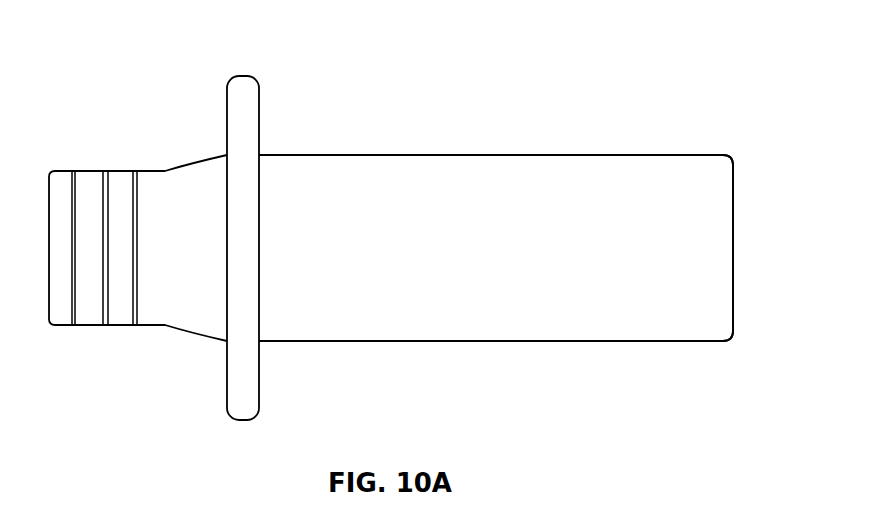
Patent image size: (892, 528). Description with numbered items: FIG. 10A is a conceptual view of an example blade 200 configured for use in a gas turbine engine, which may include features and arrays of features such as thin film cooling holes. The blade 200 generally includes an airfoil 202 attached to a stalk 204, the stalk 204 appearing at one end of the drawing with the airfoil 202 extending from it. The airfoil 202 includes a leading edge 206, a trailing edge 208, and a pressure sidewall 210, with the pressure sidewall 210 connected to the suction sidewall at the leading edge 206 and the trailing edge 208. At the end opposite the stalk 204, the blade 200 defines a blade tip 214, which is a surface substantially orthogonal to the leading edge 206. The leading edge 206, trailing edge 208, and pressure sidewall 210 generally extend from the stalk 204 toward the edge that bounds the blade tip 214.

The blade 200 is at (112, 54).
The airfoil 202 is at (449, 335).
The stalk 204 is at (153, 325).
The leading edge 206 is at (355, 341).
The trailing edge 208 is at (413, 154).
The pressure sidewall 210 is at (496, 248).
The blade tip 214 is at (740, 176).